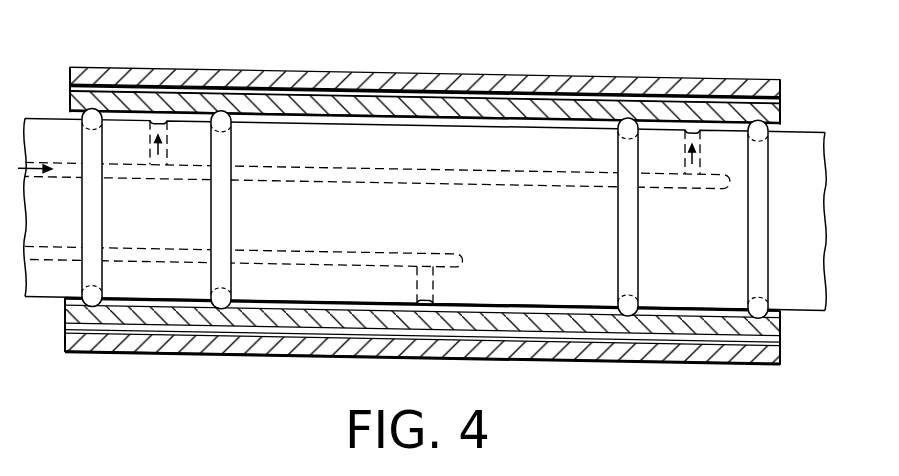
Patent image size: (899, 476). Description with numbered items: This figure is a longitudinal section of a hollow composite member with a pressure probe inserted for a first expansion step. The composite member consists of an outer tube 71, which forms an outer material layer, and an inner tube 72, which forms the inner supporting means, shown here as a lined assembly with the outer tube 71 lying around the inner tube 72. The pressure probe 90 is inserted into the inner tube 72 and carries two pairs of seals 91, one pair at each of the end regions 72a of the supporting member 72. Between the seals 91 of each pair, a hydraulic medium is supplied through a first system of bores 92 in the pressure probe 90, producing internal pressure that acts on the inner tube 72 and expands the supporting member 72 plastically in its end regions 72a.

The outer tube 71 is at (403, 82).
The inner tube 72 is at (273, 105).
The end regions 72a is at (162, 100).
The pressure probe 90 is at (797, 147).
The seals 91 is at (217, 225).
The first system of bores 92 is at (355, 173).